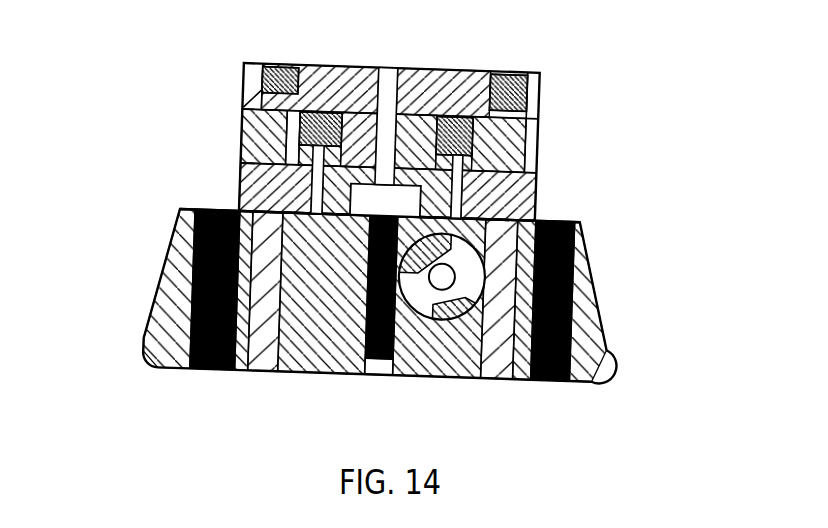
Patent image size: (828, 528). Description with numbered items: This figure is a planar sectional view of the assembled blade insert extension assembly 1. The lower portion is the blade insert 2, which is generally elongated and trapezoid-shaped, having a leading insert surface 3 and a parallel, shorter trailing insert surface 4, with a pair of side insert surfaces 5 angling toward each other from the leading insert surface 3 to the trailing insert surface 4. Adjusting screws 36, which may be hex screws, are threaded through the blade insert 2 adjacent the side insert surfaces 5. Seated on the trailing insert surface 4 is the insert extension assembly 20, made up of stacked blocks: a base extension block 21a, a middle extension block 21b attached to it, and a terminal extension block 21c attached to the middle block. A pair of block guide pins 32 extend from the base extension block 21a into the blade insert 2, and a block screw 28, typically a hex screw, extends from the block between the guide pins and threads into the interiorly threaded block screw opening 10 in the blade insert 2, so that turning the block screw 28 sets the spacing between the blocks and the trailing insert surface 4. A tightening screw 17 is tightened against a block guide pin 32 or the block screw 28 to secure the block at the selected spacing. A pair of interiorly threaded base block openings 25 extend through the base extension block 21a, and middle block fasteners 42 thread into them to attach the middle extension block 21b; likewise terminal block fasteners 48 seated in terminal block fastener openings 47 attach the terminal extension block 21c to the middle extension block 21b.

The blade insert extension assembly 1 is at (372, 244).
The blade insert 2 is at (167, 263).
The leading insert surface 3 is at (343, 367).
The trailing insert surface 4 is at (578, 209).
The side insert surfaces 5 is at (153, 289).
The block screw opening 10 is at (446, 369).
The tightening screw 17 is at (488, 368).
The insert extension assembly 20 is at (536, 145).
The base extension block 21a is at (540, 190).
The middle extension block 21b is at (240, 121).
The terminal extension block 21c is at (239, 82).
The base block openings 25 is at (242, 171).
The block screw 28 is at (381, 365).
The block guide pin 32 is at (267, 357).
The adjusting screw 36 is at (222, 371).
The middle block fasteners 42 is at (240, 133).
The terminal block fastener openings 47 is at (253, 56).
The terminal block fasteners 48 is at (306, 58).